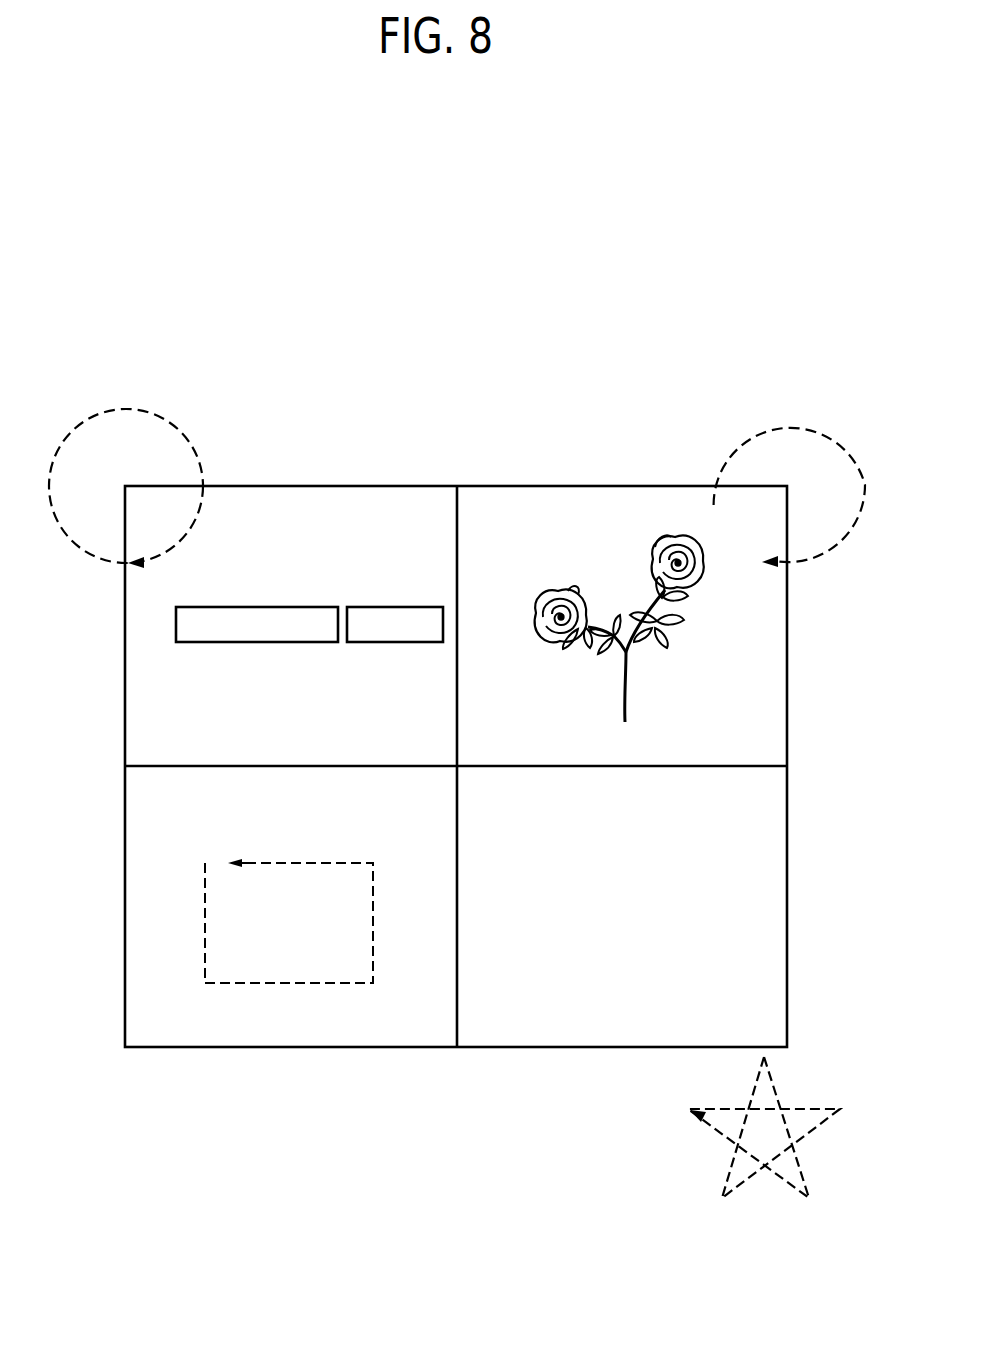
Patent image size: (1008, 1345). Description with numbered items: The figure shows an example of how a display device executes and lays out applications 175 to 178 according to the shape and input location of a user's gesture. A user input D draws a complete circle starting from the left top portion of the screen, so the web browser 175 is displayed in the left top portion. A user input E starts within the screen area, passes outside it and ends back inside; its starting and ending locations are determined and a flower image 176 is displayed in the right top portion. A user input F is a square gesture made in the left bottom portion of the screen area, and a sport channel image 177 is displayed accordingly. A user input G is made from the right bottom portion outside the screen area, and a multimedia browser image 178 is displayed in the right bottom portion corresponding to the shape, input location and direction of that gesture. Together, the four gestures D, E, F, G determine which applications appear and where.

The web browser 175 is at (288, 506).
The flower image 176 is at (621, 506).
The sport channel image 177 is at (291, 945).
The multimedia browser image 178 is at (621, 1027).
The user input D is at (126, 410).
The user input E is at (788, 410).
The user input F is at (373, 921).
The user input G is at (812, 1108).